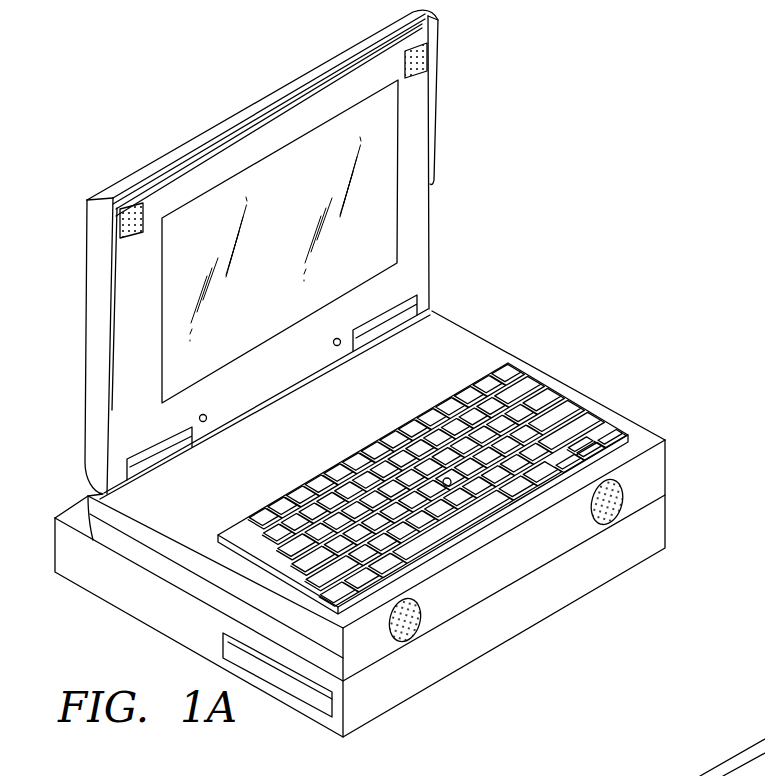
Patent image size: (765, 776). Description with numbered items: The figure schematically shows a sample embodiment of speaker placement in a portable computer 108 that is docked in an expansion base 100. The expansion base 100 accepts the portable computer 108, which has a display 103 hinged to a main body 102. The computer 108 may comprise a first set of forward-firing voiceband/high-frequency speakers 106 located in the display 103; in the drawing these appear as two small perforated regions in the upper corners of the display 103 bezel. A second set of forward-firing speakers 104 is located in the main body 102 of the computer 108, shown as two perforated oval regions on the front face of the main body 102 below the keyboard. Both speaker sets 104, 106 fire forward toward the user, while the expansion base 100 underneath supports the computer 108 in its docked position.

The expansion base 100 is at (149, 614).
The main body 102 is at (487, 341).
The display 103 is at (391, 203).
The second set of forward-firing speakers 104 is at (408, 632).
The first set of forward-firing voiceband/high-frequency speakers 106 is at (423, 59).
The portable computer 108 is at (542, 135).